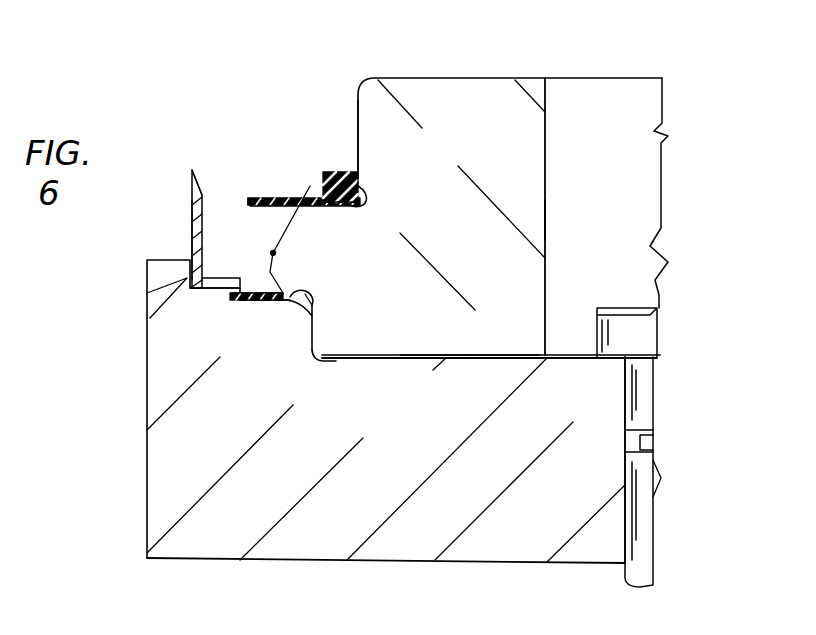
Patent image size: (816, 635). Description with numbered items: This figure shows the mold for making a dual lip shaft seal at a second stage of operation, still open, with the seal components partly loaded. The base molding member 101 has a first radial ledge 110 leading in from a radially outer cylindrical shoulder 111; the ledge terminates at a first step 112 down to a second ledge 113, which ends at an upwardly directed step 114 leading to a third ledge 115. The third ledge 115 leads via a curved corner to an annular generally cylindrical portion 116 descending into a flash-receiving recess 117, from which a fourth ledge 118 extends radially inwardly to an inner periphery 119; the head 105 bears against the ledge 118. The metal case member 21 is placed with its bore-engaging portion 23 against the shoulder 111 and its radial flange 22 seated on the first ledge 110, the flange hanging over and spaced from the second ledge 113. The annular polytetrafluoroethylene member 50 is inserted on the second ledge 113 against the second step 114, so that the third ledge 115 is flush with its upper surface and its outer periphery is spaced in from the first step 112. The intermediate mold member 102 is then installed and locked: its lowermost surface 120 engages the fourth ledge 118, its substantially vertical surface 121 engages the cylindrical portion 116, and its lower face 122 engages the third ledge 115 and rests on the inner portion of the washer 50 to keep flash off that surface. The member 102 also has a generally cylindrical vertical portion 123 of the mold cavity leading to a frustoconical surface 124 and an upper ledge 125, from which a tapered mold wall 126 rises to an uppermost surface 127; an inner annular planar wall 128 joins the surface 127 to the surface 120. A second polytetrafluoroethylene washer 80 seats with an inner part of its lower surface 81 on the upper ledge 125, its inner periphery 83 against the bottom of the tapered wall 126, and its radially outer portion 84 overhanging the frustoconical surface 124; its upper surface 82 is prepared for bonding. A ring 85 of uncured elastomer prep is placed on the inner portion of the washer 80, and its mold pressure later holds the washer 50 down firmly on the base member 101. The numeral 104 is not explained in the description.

The case member 21 is at (190, 184).
The radial flange 22 is at (192, 277).
The cylindrical bore-engaging portion 23 is at (190, 218).
The annular polytetrafluoroethylene member 50 is at (320, 333).
The second polytetrafluoroethylene washer 80 is at (310, 198).
The lower surface 81 is at (315, 208).
The upper surface 82 is at (365, 200).
The inner periphery 83 is at (362, 188).
The radially outer portion 84 is at (255, 198).
The ring of prep 85 is at (325, 172).
The base molding member 101 is at (428, 428).
The intermediate mold member 102 is at (485, 155).
The channel portion 104 is at (630, 422).
The head 105 is at (627, 323).
The first radial ledge 110 is at (212, 293).
The radially outer cylindrical shoulder 111 is at (142, 298).
The first step 112 is at (253, 299).
The second ledge 113 is at (258, 313).
The second step 114 is at (272, 289).
The third ledge 115 is at (298, 294).
The annular generally cylindrical portion 116 is at (312, 328).
The flash-receiving recess 117 is at (324, 358).
The fourth ledge 118 is at (437, 355).
The inner periphery 119 is at (627, 395).
The lowermost surface 120 is at (503, 355).
The substantially vertical surface 121 is at (318, 337).
The lower face 122 is at (313, 310).
The generally cylindrical vertical portion 123 is at (276, 283).
The frustoconical surface 124 is at (276, 253).
The upper ledge 125 is at (328, 206).
The tapered mold wall 126 is at (358, 138).
The uppermost surface 127 is at (500, 78).
The inner annular planar wall 128 is at (548, 207).